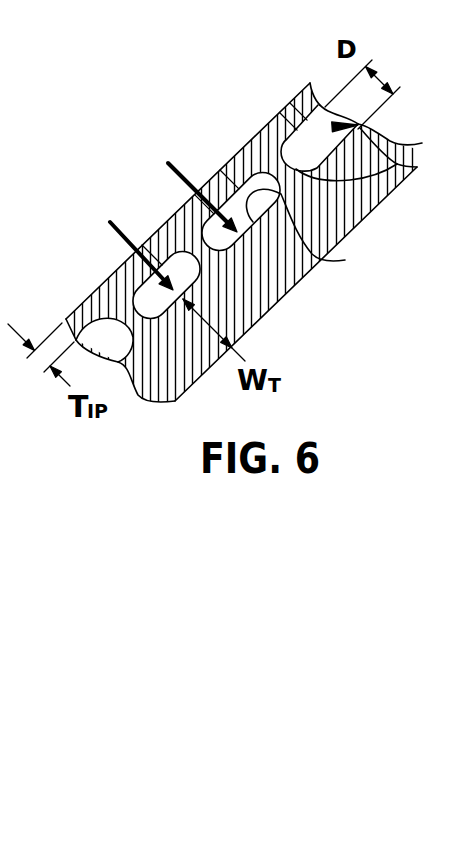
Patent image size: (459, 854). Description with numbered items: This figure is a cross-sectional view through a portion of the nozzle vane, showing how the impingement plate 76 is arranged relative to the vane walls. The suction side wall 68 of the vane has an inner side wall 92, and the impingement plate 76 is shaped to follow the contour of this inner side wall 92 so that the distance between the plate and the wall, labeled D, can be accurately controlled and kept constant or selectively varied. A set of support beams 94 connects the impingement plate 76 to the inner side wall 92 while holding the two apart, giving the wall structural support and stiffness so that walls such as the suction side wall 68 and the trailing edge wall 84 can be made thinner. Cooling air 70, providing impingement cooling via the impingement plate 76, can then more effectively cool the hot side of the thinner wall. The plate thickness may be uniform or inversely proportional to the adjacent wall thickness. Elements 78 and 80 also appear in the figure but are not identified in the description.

The suction side wall 68 is at (309, 284).
The cooling air 70 is at (170, 172).
The impingement plate 76 is at (96, 292).
The channel 78 is at (270, 109).
The head portion 80 is at (380, 123).
The trailing edge wall 84 is at (396, 172).
The inner side wall 92 is at (345, 260).
The support beams 94 is at (312, 192).